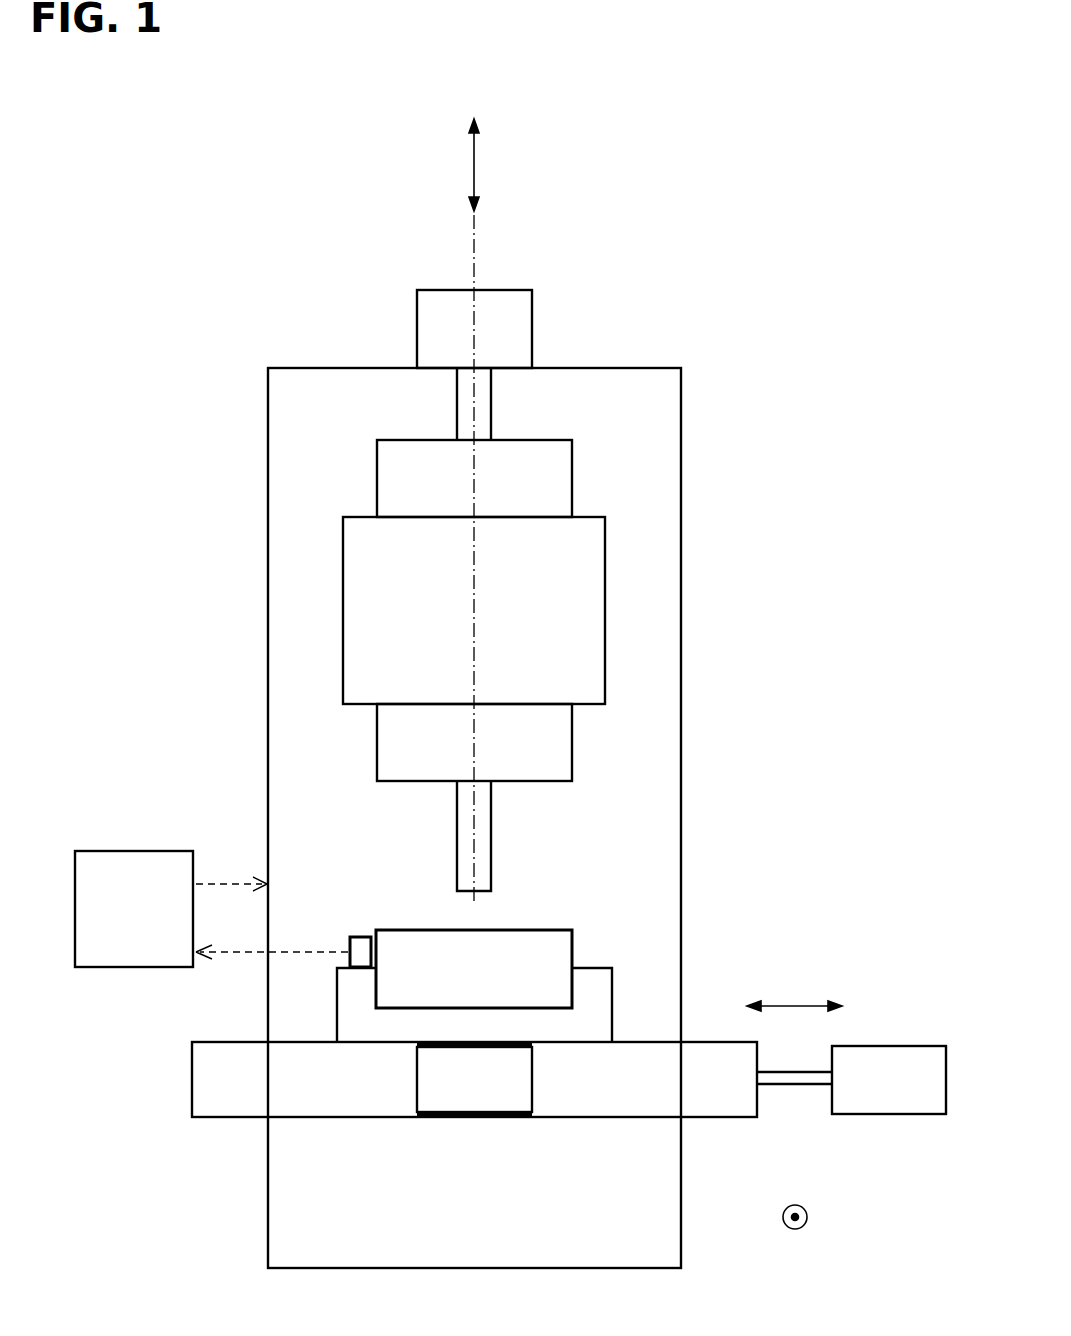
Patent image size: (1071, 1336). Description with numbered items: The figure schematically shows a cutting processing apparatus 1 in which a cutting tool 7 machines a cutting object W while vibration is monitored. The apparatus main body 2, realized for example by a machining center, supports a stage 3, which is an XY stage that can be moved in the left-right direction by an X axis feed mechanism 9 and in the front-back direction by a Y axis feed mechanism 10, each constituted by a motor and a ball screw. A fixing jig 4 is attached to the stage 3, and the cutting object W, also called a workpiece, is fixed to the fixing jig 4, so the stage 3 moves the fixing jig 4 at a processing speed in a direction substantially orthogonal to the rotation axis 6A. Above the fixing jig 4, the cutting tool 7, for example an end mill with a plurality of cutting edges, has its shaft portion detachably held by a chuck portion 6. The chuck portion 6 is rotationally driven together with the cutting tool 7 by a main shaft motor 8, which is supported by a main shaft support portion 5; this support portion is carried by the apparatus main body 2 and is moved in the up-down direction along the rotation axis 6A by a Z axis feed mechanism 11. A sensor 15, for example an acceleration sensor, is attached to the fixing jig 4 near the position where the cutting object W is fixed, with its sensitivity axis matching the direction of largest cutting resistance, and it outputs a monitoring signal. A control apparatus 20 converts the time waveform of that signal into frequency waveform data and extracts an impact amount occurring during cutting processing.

The cutting processing apparatus 1 is at (703, 283).
The apparatus main body 2 is at (668, 398).
The stage 3 is at (227, 1100).
The fixing jig 4 is at (348, 1007).
The main shaft support portion 5 is at (355, 610).
The chuck portion 6 is at (390, 742).
The rotation axis 6A is at (474, 260).
The cutting tool 7 is at (457, 835).
The main shaft motor 8 is at (557, 476).
The X axis feed mechanism 9 is at (886, 1056).
The Y axis feed mechanism 10 is at (474, 1098).
The Z axis feed mechanism 11 is at (510, 305).
The sensor 15 is at (360, 938).
The control apparatus 20 is at (133, 862).
The cutting object W is at (544, 945).